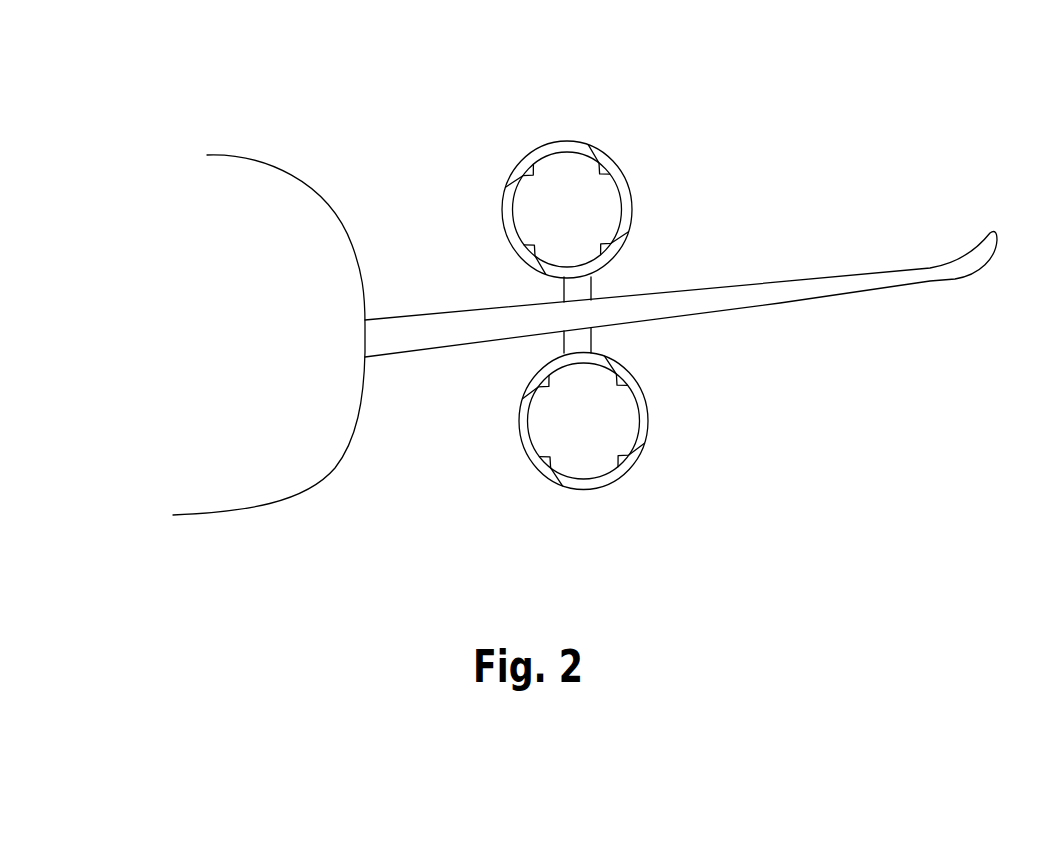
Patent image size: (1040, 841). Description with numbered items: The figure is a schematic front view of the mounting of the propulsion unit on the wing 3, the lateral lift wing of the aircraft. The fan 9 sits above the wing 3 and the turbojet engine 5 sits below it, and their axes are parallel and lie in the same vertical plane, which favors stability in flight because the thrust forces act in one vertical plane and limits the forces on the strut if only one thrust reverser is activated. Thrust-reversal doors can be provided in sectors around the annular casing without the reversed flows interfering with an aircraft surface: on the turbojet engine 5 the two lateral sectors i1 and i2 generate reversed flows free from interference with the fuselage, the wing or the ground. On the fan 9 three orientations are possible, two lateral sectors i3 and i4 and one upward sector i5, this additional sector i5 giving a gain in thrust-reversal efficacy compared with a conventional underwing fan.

The wing 3 is at (797, 310).
The turbojet engine 5 is at (588, 467).
The fan 9 is at (588, 163).
The lateral thrust-reversal sector i1 is at (528, 427).
The lateral thrust-reversal sector i2 is at (673, 406).
The lateral thrust-reversal sector of the fan i3 is at (510, 212).
The lateral thrust-reversal sector of the fan i4 is at (625, 197).
The upward thrust-reversal sector of the fan i5 is at (564, 150).